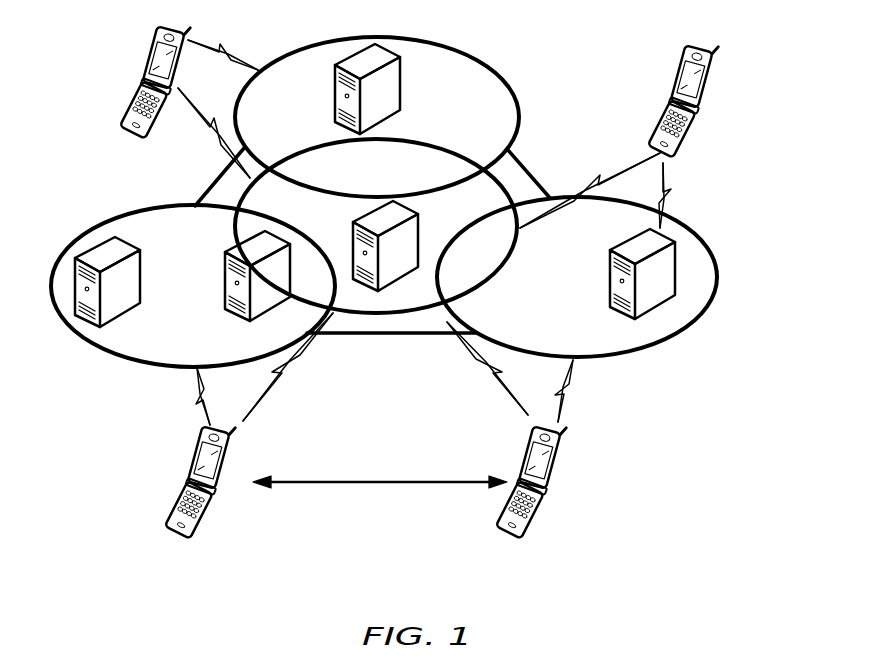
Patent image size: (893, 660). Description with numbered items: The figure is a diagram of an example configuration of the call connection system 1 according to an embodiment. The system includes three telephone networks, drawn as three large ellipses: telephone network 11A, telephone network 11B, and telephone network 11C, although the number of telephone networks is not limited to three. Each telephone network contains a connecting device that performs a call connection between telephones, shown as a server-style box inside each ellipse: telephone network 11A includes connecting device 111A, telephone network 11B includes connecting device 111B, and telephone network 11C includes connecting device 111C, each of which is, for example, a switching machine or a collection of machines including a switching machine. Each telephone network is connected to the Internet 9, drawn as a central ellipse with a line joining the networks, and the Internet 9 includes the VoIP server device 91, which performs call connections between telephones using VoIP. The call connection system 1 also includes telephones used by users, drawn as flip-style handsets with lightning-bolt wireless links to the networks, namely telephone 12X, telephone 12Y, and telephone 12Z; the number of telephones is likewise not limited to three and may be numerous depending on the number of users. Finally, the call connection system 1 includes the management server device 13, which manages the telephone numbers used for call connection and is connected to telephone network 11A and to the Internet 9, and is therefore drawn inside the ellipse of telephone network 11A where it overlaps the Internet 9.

The call connection system 1 is at (633, 405).
The Internet 9 is at (369, 317).
The telephone network 11A is at (118, 217).
The telephone network 11B is at (650, 346).
The telephone network 11C is at (535, 66).
The telephone 12X is at (210, 510).
The telephone 12Y is at (677, 88).
The telephone 12Z is at (147, 62).
The management server device 13 is at (225, 275).
The VoIP server device 91 is at (418, 233).
The connecting device 111A is at (130, 312).
The connecting device 111B is at (610, 279).
The connecting device 111C is at (402, 102).